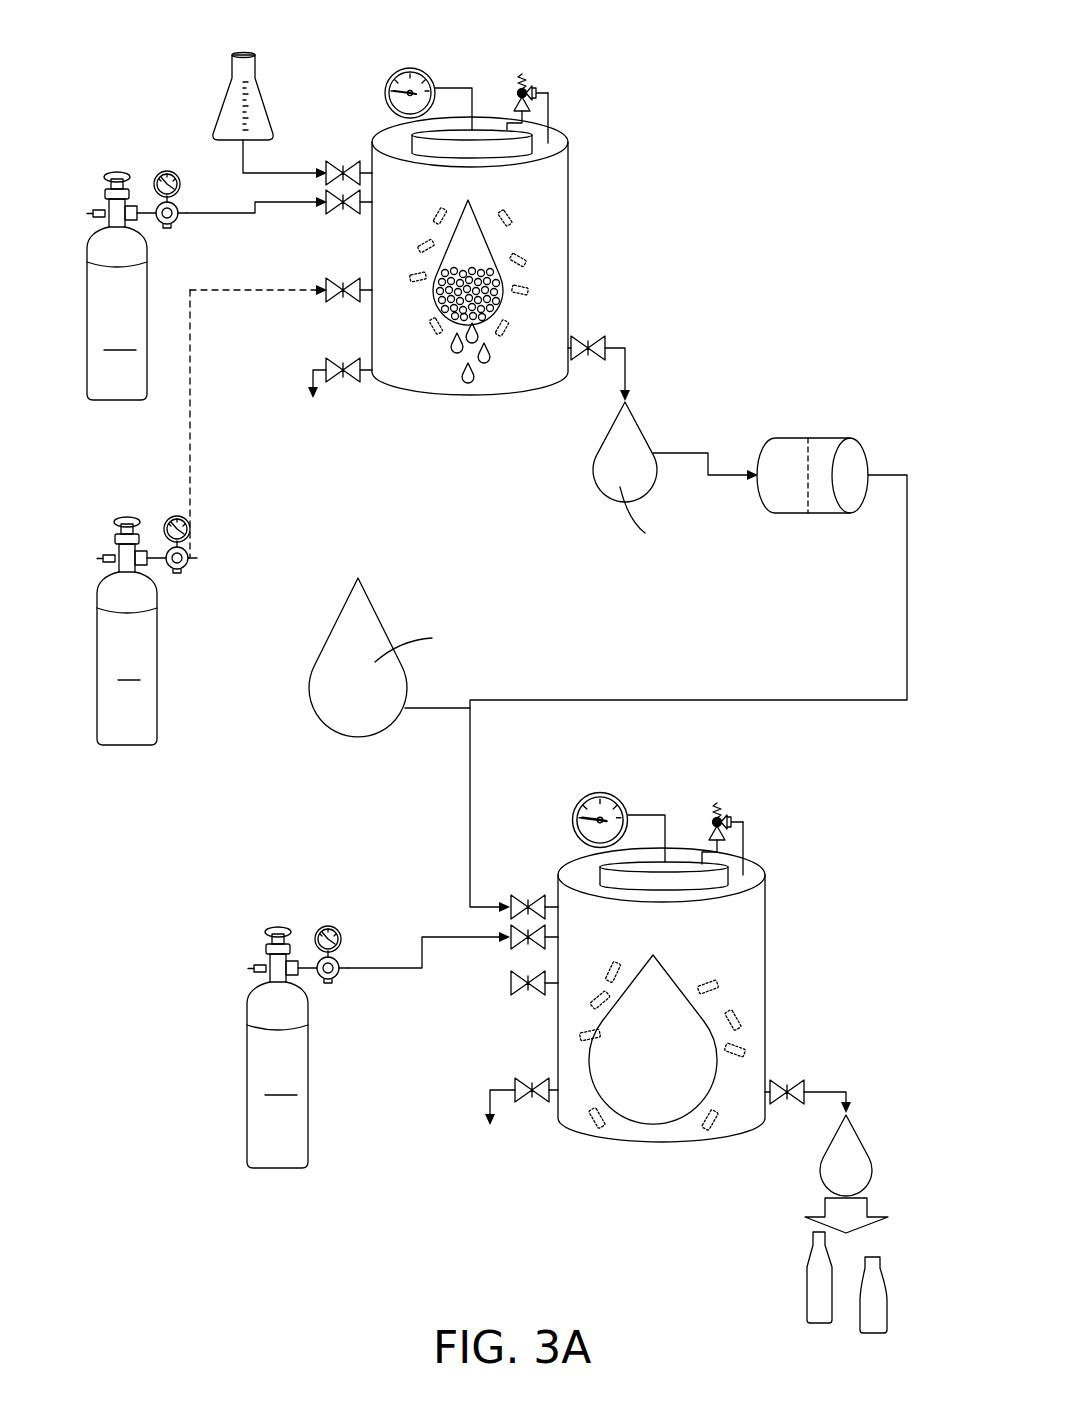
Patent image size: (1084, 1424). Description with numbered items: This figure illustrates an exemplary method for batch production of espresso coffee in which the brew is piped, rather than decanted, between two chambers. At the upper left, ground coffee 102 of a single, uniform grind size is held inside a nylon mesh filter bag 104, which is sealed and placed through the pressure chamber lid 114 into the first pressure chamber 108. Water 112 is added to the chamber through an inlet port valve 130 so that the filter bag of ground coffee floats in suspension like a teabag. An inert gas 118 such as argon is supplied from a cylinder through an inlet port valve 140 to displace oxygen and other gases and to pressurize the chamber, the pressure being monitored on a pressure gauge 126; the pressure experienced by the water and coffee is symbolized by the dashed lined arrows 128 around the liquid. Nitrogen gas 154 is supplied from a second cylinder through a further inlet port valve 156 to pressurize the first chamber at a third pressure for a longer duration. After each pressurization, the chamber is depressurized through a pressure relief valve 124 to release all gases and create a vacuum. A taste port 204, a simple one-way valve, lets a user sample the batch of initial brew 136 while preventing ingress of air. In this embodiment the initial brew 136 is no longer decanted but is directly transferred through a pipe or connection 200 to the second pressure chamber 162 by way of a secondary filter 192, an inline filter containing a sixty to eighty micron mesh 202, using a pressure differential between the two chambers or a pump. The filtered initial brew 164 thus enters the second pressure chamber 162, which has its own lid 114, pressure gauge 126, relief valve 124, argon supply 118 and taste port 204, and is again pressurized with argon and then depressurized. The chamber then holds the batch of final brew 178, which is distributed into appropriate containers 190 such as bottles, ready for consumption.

The ground coffee 102 is at (480, 288).
The nylon mesh filter bag 104 is at (500, 247).
The pressure chamber 108 is at (432, 375).
The water 112 is at (222, 107).
The pressure chamber lid 114 is at (480, 140).
The inert gas (Argon) 118 is at (118, 404).
The pressure relief valve 124 is at (530, 90).
The pressure gauge 126 is at (425, 72).
The dashed lined arrows (pressure) 128 is at (430, 322).
The inlet port valve 130 is at (343, 163).
The initial brew 136 is at (468, 383).
The inlet port valve 140 is at (348, 212).
The Nitrogen gas 154 is at (157, 680).
The inlet port valve 156 is at (343, 302).
The second pressure chamber 162 is at (765, 990).
The filtered initial brew 164 is at (311, 688).
The final brew 178 is at (820, 1173).
The containers (bottles) 190 is at (806, 1300).
The secondary filter 192 is at (795, 437).
The pipe or connection 200 is at (907, 595).
The 60 to 80 micron mesh 202 is at (807, 483).
The taste port 204 is at (298, 380).